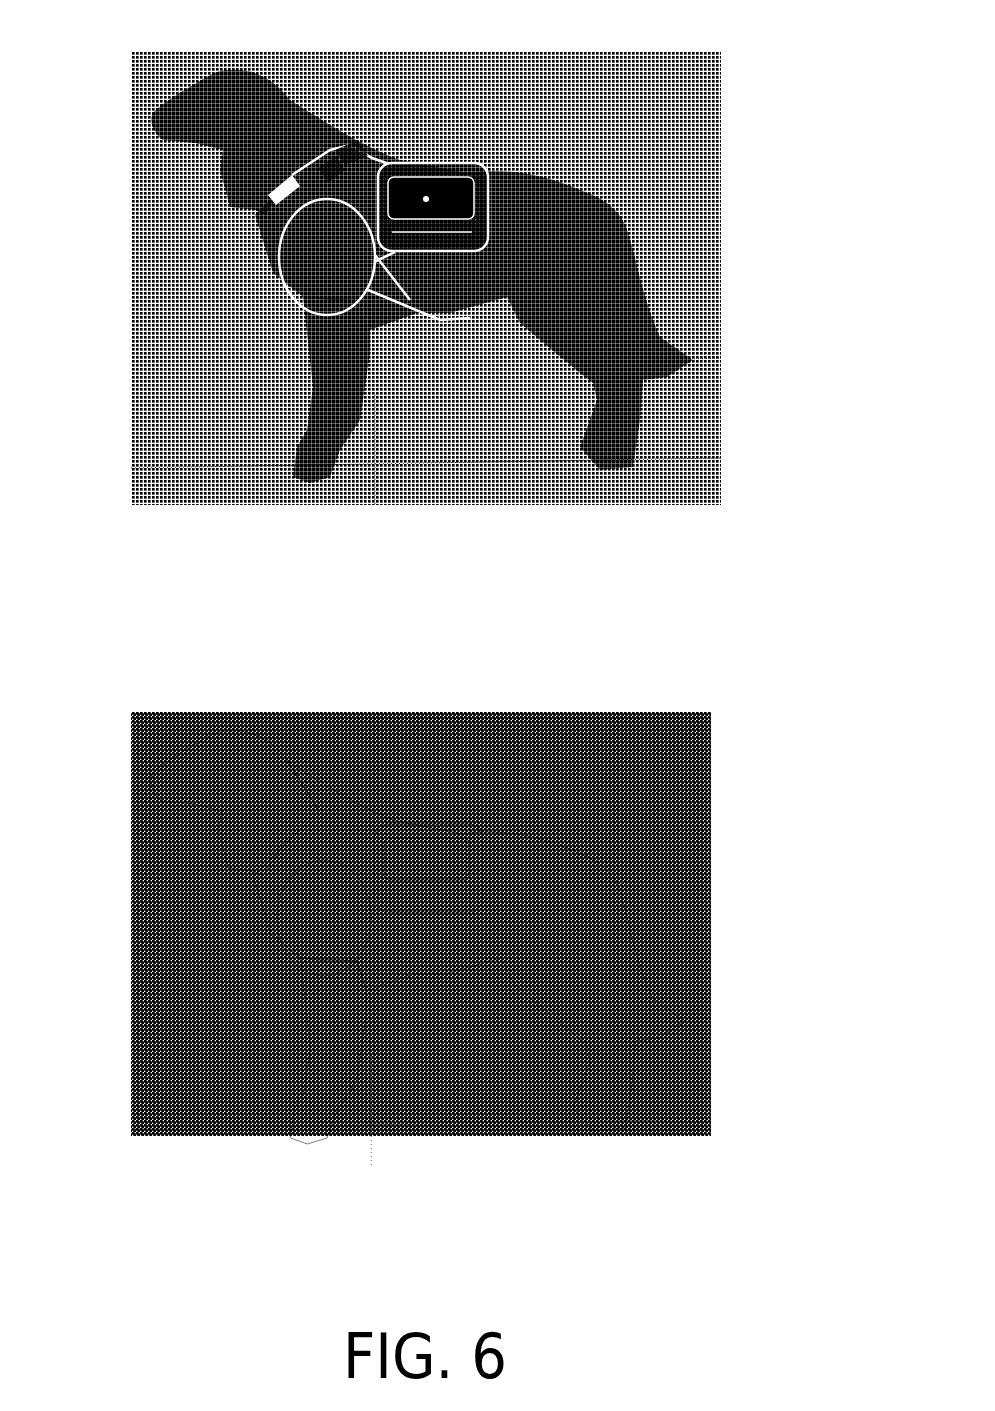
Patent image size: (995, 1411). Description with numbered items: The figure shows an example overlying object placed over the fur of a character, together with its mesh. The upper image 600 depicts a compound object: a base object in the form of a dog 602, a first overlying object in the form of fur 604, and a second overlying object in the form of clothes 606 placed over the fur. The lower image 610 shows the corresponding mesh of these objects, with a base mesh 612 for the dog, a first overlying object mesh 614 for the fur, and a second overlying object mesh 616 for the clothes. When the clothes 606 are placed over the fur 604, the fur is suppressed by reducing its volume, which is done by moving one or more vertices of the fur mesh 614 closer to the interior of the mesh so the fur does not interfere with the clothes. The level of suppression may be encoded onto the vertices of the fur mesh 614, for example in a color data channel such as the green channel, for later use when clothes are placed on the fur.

The image 600 is at (702, 52).
The dog 602 is at (176, 129).
The fur 604 is at (317, 328).
The clothes 606 is at (387, 170).
The image 610 is at (669, 713).
The base mesh 612 is at (170, 790).
The first overlying object mesh 614 is at (322, 982).
The second overlying object mesh 616 is at (393, 825).